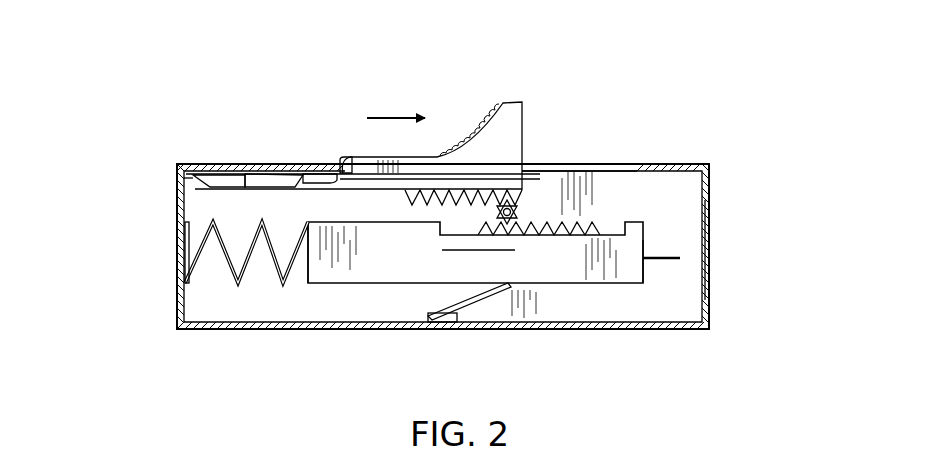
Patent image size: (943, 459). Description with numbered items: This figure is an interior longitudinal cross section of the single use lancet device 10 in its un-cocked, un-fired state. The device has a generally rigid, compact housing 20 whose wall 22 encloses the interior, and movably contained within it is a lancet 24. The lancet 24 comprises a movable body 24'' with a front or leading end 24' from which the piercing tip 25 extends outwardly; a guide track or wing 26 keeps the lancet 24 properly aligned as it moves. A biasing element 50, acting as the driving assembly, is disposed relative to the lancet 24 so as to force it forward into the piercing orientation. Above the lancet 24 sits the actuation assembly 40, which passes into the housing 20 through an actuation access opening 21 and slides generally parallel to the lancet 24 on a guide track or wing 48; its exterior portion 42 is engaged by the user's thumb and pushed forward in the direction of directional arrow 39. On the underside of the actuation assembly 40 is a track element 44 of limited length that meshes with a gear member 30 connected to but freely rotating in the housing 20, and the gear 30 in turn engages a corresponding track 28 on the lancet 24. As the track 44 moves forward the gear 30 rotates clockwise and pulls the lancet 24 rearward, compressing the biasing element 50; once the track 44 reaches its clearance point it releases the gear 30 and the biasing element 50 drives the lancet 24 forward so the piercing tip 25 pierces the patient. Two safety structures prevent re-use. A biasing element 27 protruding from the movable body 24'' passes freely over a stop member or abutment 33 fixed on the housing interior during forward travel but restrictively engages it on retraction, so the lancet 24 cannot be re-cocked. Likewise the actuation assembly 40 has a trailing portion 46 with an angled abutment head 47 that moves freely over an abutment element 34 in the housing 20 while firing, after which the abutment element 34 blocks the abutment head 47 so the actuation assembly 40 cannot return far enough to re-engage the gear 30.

The single use lancet device 10 is at (155, 92).
The housing 20 is at (715, 170).
The actuation access opening 21 is at (627, 163).
The side wall 22 is at (708, 257).
The lancet 24 is at (475, 271).
The front or leading end 24' is at (688, 306).
The movable body 24'' is at (326, 299).
The piercing tip 25 is at (665, 257).
The guide track or wing 26 is at (443, 250).
The biasing element 27 is at (497, 291).
The track 28 is at (592, 222).
The gear member 30 is at (515, 213).
The stop member or abutment 33 is at (452, 322).
The abutment element 34 is at (302, 173).
The directional arrow 39 is at (395, 98).
The actuation assembly 40 is at (508, 95).
The exterior portion 42 is at (455, 96).
The track element 44 is at (400, 200).
The trailing portion 46 is at (240, 176).
The abutment head 47 is at (185, 178).
The guide track or wing 48 is at (348, 160).
The biasing element 50 is at (188, 248).